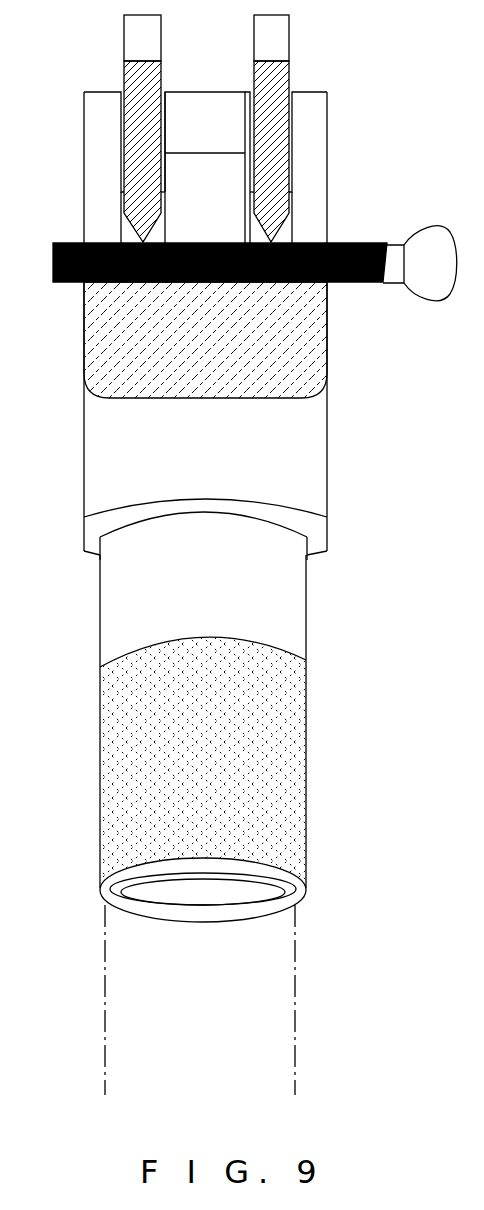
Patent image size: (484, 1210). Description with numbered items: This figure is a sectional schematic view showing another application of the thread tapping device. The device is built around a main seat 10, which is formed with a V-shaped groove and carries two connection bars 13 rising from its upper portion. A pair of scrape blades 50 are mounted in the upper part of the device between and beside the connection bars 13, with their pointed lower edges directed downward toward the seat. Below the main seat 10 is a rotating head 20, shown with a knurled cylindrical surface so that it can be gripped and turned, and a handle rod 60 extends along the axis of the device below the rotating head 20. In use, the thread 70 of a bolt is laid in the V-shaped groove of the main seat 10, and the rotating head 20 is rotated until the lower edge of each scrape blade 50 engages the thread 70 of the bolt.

The main seat 10 is at (315, 437).
The connection bars 13 is at (97, 118).
The rotating head 20 is at (113, 755).
The scrape blades 50 is at (138, 33).
The handle rod 60 is at (113, 1030).
The thread 70 is at (352, 243).